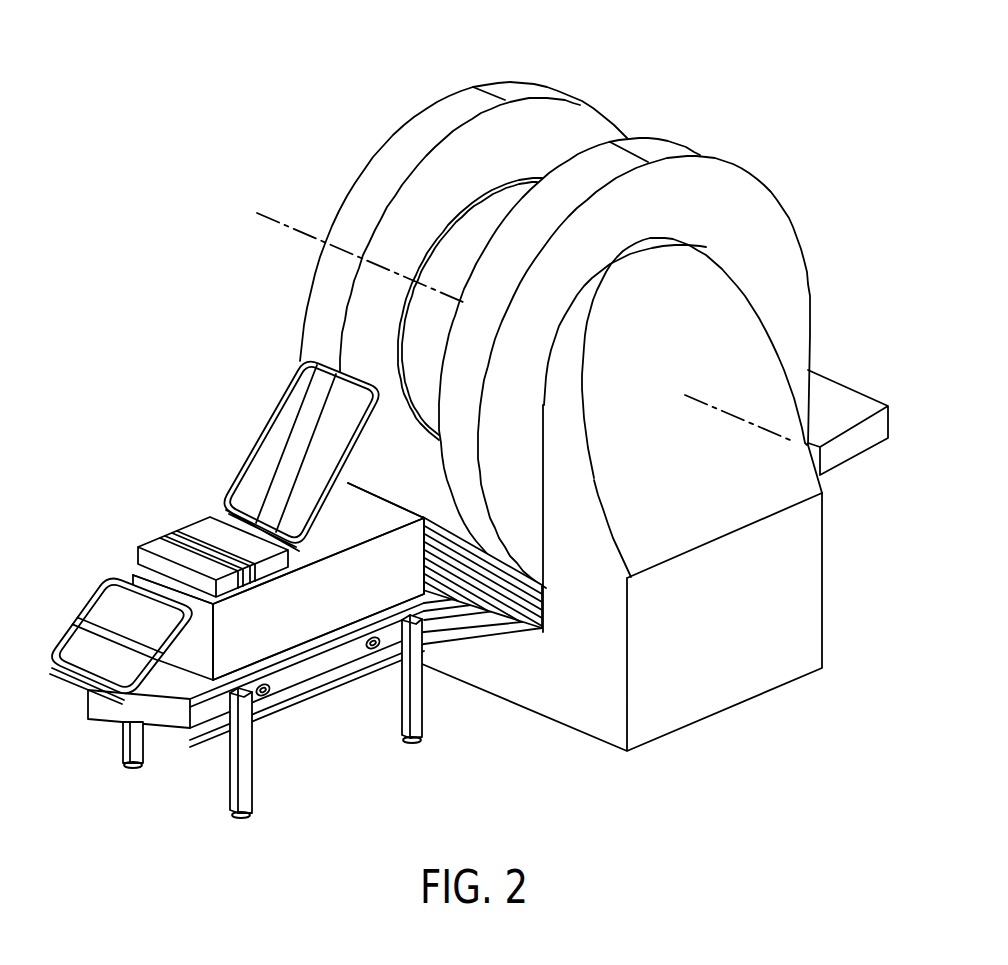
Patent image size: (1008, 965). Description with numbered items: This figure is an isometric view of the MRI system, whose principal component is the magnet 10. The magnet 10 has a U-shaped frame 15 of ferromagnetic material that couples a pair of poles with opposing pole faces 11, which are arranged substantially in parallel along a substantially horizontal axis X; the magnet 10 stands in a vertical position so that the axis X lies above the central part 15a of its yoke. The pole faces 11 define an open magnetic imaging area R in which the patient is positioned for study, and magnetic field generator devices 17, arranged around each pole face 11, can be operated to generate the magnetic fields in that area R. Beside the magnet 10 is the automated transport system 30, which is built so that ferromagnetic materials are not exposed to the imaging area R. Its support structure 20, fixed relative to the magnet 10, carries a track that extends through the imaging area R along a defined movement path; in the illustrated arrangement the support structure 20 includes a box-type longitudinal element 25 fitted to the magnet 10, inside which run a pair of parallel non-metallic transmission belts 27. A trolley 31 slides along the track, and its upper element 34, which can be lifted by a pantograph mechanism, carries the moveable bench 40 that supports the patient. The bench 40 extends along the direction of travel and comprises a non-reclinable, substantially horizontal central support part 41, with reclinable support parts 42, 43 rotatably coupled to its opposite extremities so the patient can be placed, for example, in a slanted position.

The magnet 10 is at (639, 103).
The pole faces 11 is at (493, 250).
The U-shaped frame 15 is at (672, 737).
The central part of the yoke 15a is at (475, 597).
The magnetic field generator devices 17 is at (524, 80).
The support structure 20 is at (179, 744).
The box-type longitudinal element 25 is at (517, 590).
The transmission belts 27 is at (457, 567).
The automated transport system 30 is at (340, 602).
The trolley 31 is at (276, 620).
The upper element 34 is at (359, 514).
The bench 40 is at (203, 533).
The non-reclinable support part 41 is at (148, 537).
The reclinable support part 42 is at (258, 424).
The reclinable support part 43 is at (78, 620).
The horizontal axis X is at (281, 214).
The open magnetic imaging area R is at (363, 343).